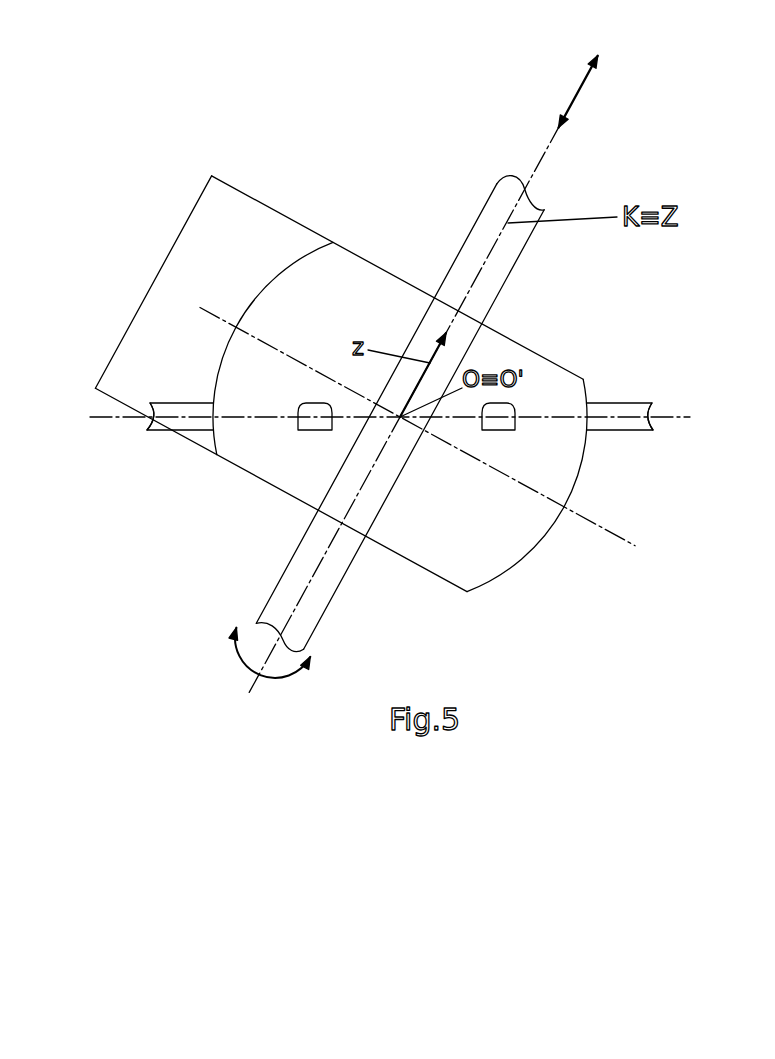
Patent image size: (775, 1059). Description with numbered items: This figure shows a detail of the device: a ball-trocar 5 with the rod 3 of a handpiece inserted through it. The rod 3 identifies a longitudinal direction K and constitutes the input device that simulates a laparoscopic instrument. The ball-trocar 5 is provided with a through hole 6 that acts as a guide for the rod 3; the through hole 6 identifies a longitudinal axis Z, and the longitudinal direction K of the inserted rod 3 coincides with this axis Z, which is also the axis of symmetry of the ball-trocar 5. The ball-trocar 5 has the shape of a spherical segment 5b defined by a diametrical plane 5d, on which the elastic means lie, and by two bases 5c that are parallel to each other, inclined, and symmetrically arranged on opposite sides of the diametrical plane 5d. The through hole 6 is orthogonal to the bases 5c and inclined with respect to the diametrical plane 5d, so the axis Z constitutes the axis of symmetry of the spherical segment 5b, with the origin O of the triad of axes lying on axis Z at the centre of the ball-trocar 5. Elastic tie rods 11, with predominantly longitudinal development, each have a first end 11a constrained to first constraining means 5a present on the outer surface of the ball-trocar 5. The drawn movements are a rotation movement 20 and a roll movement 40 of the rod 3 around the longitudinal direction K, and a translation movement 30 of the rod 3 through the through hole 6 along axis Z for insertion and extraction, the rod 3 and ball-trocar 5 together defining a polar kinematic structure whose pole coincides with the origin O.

The rod 3 is at (426, 404).
The ball-trocar 5 is at (386, 355).
The first constraining means 5a is at (215, 419).
The spherical segment 5b is at (150, 288).
The bases 5c is at (263, 482).
The diametrical plane 5d is at (283, 350).
The through hole 6 is at (490, 320).
The elastic tie rods 11 is at (399, 408).
The first end 11a is at (210, 418).
The rotation movement 20 is at (269, 690).
The roll movement 40 is at (270, 680).
The translation movement 30 is at (582, 90).